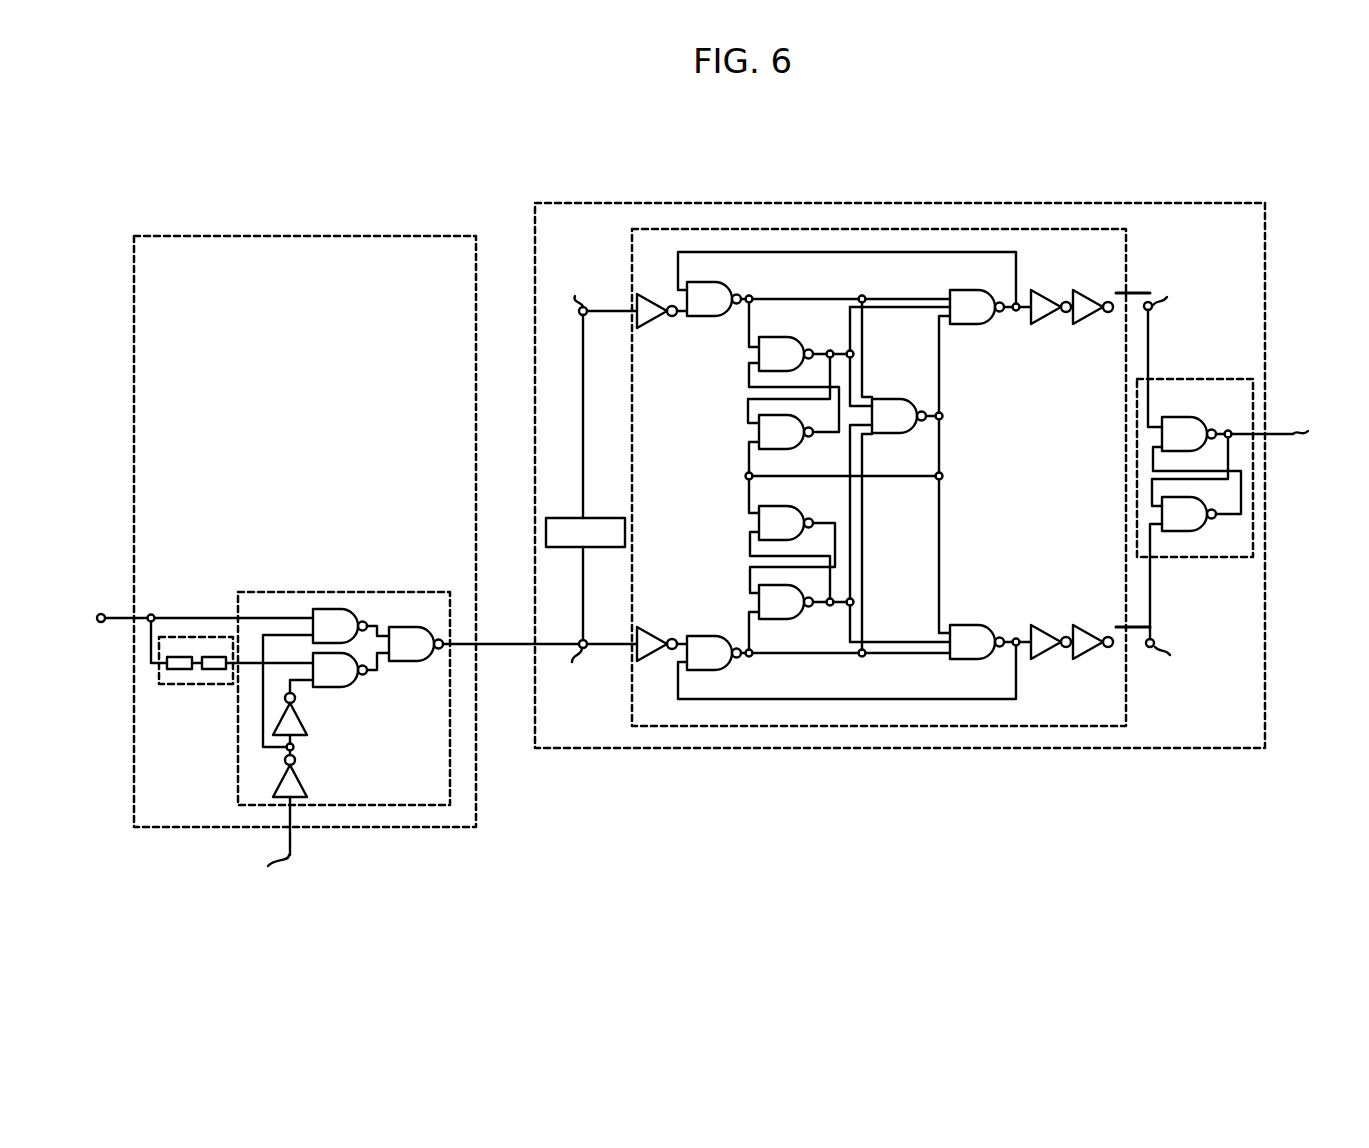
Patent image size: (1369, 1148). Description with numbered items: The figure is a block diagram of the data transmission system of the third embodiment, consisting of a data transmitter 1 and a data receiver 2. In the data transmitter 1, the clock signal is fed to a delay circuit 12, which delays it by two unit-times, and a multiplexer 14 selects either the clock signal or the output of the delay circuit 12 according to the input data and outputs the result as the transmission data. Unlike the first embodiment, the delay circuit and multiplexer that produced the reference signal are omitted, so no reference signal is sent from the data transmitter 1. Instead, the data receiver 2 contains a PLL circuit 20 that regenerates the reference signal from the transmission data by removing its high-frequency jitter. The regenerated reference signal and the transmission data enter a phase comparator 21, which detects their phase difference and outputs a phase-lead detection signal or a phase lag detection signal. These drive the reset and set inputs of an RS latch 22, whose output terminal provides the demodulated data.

The data transmitter 1 is at (474, 236).
The data receiver 2 is at (1265, 203).
The delay circuit 12 is at (212, 685).
The multiplexer 14 is at (380, 806).
The PLL circuit 20 is at (585, 532).
The phase comparator 21 is at (1126, 229).
The RS latch 22 is at (1253, 378).